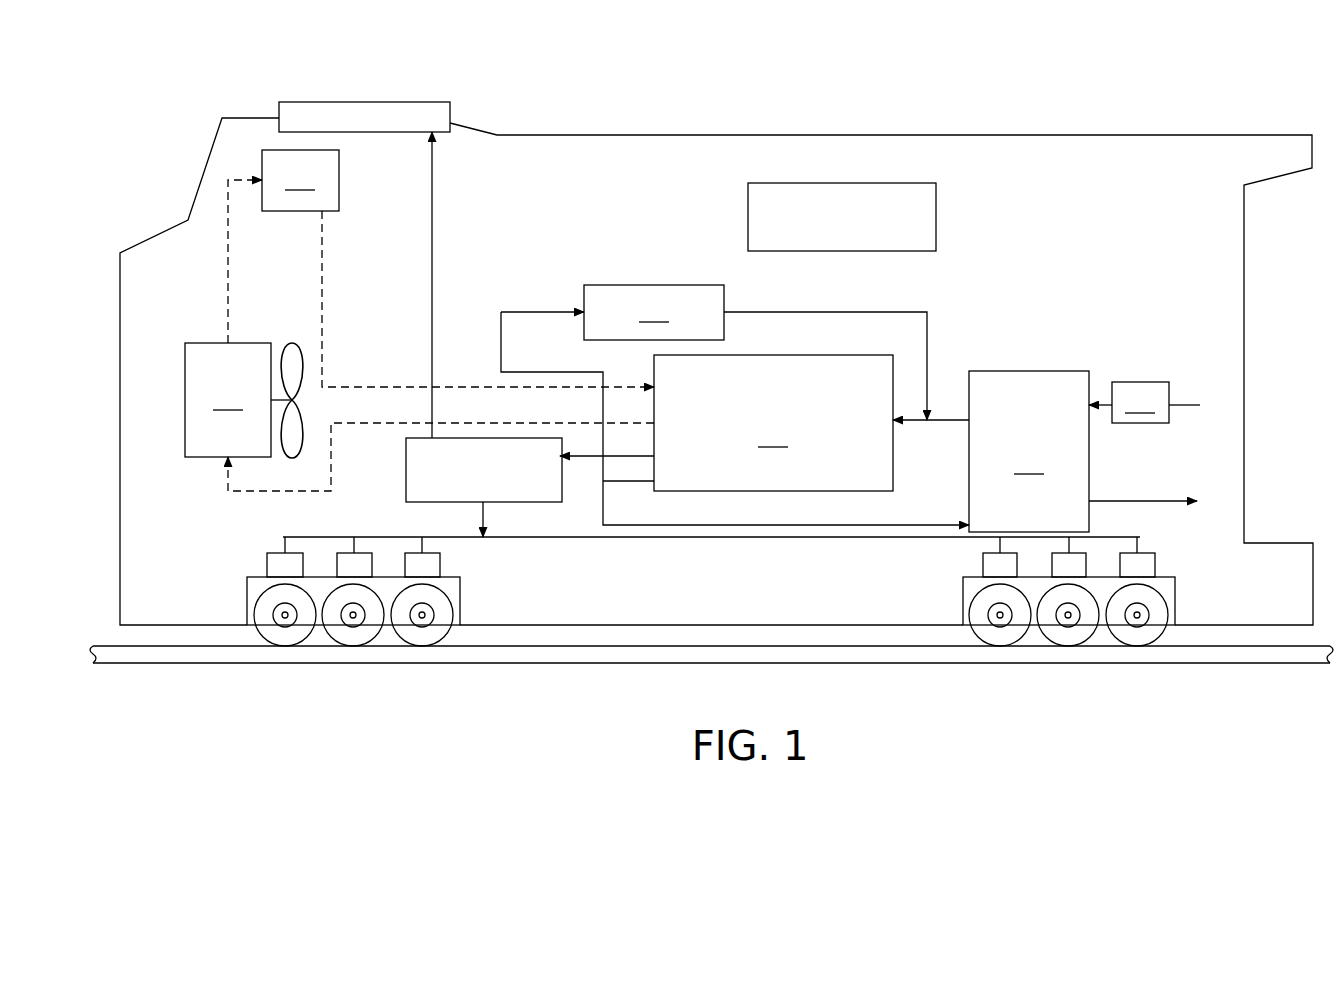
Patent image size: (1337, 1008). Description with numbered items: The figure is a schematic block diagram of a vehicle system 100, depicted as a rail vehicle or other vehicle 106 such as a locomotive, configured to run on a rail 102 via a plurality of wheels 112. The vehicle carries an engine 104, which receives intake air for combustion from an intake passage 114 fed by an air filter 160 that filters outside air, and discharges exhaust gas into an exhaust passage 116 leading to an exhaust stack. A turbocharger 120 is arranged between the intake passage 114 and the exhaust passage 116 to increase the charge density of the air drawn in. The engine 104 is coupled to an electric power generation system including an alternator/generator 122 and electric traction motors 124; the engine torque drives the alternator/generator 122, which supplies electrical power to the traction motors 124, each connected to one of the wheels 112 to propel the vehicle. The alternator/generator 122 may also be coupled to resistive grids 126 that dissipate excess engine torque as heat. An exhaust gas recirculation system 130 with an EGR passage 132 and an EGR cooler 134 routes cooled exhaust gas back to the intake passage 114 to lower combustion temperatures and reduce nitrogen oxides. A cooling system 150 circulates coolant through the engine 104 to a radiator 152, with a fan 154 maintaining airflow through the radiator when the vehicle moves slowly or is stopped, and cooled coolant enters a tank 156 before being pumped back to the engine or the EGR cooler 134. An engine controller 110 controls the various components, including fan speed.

The vehicle system 100 is at (1151, 77).
The rail 102 is at (1243, 663).
The engine 104 is at (773, 423).
The vehicle 106 is at (1000, 135).
The engine controller 110 is at (936, 195).
The wheels 112 is at (448, 607).
The intake passage 114 is at (950, 423).
The exhaust passage 116 is at (618, 485).
The turbocharger 120 is at (1029, 451).
The alternator/generator 122 is at (406, 473).
The electric traction motors 124 is at (440, 565).
The resistive grids 126 is at (450, 97).
The exhaust gas recirculation system 130 is at (927, 300).
The EGR passage 132 is at (518, 310).
The EGR cooler 134 is at (654, 312).
The cooling system 150 is at (205, 305).
The radiator 152 is at (228, 400).
The fan 154 is at (301, 343).
The tank 156 is at (300, 180).
The air filter 160 is at (1140, 402).